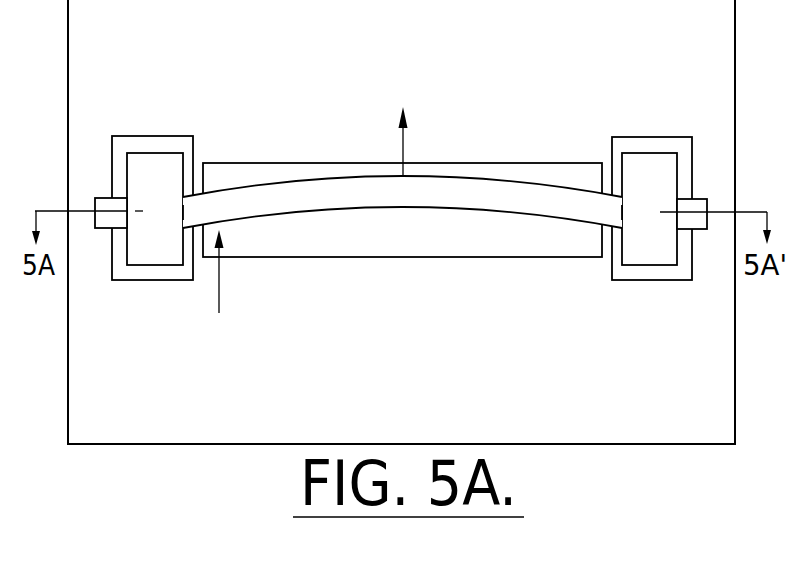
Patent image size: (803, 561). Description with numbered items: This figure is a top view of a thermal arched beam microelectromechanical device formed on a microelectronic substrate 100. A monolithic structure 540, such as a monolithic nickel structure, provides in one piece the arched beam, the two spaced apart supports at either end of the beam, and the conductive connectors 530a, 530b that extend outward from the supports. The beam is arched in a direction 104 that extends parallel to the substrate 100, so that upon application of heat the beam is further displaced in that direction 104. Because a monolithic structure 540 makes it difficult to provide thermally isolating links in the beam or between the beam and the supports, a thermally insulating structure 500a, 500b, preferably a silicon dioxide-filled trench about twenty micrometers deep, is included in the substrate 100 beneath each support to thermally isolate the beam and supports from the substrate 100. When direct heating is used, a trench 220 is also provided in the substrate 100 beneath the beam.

The microelectronic substrate 100 is at (133, 42).
The direction of arching 104 is at (403, 142).
The trench 220 is at (428, 247).
The thermally insulating structure 500a is at (160, 143).
The thermally insulating structure 500b is at (677, 147).
The conductive connector 530a is at (101, 230).
The conductive connector 530b is at (698, 223).
The monolithic structure 540 is at (218, 291).